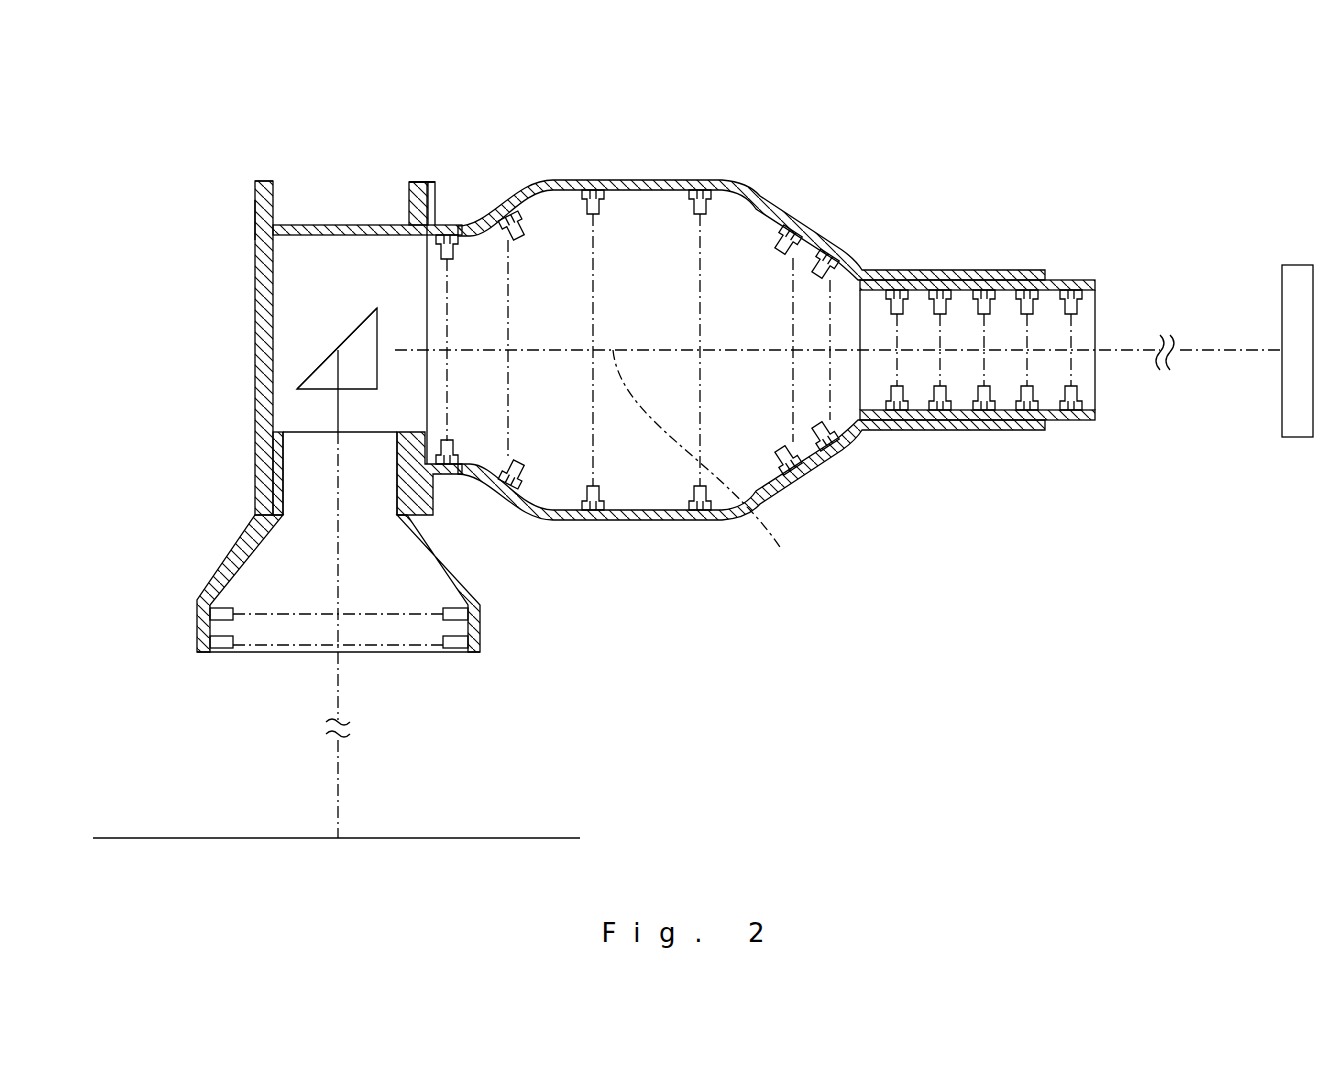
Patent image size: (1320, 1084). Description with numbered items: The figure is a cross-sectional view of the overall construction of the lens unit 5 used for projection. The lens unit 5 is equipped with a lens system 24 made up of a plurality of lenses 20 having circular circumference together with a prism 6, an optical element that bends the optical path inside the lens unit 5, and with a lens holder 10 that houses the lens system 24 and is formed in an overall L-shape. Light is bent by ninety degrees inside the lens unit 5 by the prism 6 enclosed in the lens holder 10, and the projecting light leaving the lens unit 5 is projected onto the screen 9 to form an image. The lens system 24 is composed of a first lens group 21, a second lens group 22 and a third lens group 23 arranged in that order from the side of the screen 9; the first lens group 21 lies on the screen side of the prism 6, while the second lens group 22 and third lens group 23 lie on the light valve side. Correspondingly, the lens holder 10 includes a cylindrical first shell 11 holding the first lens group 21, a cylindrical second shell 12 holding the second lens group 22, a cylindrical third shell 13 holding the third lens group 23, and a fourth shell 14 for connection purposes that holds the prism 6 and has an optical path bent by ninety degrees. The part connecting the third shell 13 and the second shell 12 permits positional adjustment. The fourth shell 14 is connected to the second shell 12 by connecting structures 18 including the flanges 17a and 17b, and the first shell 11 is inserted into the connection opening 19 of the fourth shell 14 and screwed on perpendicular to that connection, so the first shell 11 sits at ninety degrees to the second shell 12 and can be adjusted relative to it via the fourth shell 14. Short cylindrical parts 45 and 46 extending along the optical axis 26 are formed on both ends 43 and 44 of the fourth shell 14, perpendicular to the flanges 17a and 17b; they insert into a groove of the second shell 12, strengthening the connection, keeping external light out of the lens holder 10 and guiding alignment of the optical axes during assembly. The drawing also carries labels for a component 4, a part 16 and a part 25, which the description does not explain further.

The workpiece 4 is at (1293, 438).
The lens unit 5 is at (918, 512).
The prism 6 is at (313, 387).
The screen 9 is at (523, 838).
The lens holder 10 is at (797, 213).
The first shell 11 is at (225, 567).
The second shell 12 is at (670, 523).
The third shell 13 is at (1085, 282).
The fourth shell 14 is at (258, 318).
The inner wall 16 is at (437, 213).
The flange 17a is at (407, 207).
The flange 17b is at (253, 213).
The connecting structures 18 is at (253, 178).
The connection opening 19 is at (437, 517).
The lenses 20 is at (797, 245).
The first lens group 21 is at (440, 656).
The second lens group 22 is at (608, 482).
The third lens group 23 is at (998, 392).
The lens system 24 is at (737, 245).
The vertical axis 25 is at (343, 692).
The optical axis 26 is at (705, 463).
The end of fourth shell 43 is at (419, 178).
The end of fourth shell 44 is at (240, 222).
The cylindrical part 45 is at (303, 473).
The cylindrical part 46 is at (300, 373).